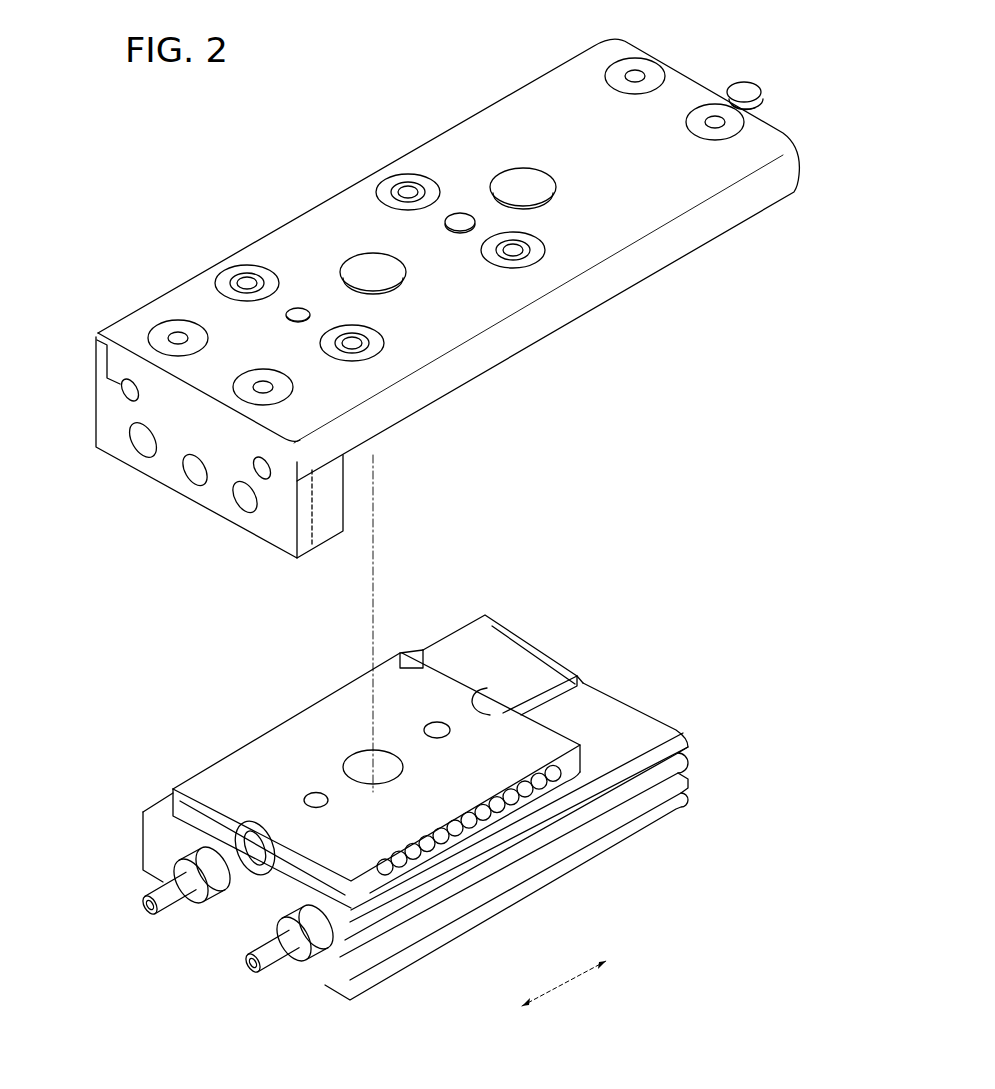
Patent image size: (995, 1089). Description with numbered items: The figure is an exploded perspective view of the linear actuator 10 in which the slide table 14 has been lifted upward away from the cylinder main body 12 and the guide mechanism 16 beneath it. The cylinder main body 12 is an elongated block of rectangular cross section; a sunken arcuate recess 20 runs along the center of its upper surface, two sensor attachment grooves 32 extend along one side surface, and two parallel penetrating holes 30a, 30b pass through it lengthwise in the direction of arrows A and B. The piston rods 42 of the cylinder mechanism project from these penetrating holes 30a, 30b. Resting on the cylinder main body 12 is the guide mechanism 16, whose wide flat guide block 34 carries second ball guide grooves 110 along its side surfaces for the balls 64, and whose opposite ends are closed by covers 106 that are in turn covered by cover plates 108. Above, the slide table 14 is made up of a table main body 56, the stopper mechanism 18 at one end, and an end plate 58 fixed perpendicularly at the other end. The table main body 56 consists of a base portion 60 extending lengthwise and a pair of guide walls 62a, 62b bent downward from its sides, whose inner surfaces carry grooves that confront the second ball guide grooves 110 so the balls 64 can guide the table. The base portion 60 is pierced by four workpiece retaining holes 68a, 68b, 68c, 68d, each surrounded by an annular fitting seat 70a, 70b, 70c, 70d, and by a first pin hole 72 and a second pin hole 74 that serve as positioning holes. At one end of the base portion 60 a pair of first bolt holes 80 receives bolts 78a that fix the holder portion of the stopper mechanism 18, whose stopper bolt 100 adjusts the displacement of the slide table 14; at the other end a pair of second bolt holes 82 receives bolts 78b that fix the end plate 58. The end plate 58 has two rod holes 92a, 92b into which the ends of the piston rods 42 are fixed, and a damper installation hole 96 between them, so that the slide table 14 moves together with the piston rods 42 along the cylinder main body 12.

The linear actuator 10 is at (177, 161).
The cylinder main body 12 is at (533, 616).
The slide table 14 is at (303, 214).
The guide mechanism 16 is at (320, 688).
The stopper mechanism 18 is at (755, 75).
The recess 20 is at (577, 690).
The penetrating hole 30a is at (160, 870).
The penetrating hole 30b is at (303, 972).
The sensor attachment grooves 32 is at (688, 790).
The guide block 34 is at (307, 722).
The piston rods 42 is at (177, 912).
The table main body 56 is at (720, 168).
The end plate 58 is at (222, 505).
The base portion 60 is at (556, 88).
The guide wall 62a is at (98, 352).
The guide wall 62b is at (312, 548).
The balls 64 is at (477, 838).
The workpiece retaining hole 68a is at (393, 178).
The workpiece retaining hole 68b is at (522, 243).
The workpiece retaining hole 68c is at (236, 268).
The workpiece retaining hole 68d is at (366, 337).
The fitting seat 70a is at (426, 189).
The fitting seat 70b is at (513, 268).
The fitting seat 70c is at (262, 282).
The fitting seat 70d is at (352, 354).
The first pin hole 72 is at (306, 312).
The second pin hole 74 is at (462, 216).
The bolts 78a is at (701, 104).
The bolts 78b is at (176, 324).
The first bolt holes 80 is at (630, 88).
The second bolt holes 82 is at (192, 340).
The rod hole 92a is at (140, 452).
The rod hole 92b is at (247, 512).
The damper installation hole 96 is at (193, 475).
The stopper bolt 100 is at (762, 98).
The covers 106 is at (403, 659).
The cover plates 108 is at (505, 690).
The second ball guide grooves 110 is at (422, 892).